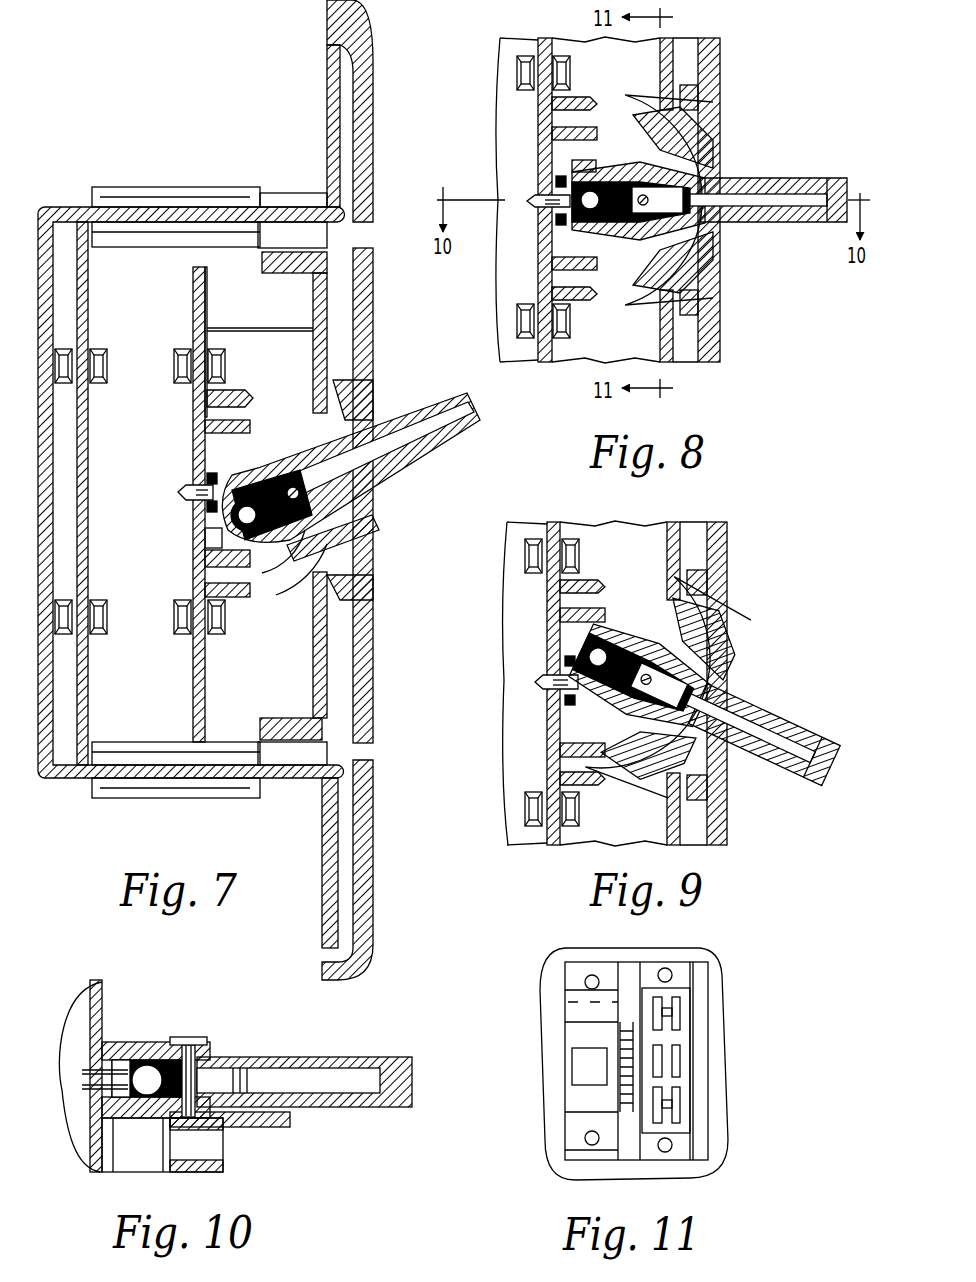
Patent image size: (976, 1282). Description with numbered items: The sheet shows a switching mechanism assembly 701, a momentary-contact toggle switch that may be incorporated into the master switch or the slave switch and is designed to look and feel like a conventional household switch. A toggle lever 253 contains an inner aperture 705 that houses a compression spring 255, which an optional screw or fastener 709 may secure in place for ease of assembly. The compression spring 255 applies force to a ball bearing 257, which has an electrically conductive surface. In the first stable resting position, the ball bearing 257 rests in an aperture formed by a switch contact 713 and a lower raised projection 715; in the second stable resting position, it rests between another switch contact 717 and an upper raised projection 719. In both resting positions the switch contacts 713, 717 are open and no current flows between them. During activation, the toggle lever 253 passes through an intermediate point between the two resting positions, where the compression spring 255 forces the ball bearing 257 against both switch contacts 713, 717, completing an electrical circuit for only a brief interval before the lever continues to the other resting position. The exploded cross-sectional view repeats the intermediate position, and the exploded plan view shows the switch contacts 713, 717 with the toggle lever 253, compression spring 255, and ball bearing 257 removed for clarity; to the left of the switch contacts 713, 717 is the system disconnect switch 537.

In FIG. 7, the switching mechanism assembly 701 is at (127, 128).
In FIG. 8, the switching mechanism assembly 701 is at (748, 70).
In FIG. 9, the switching mechanism assembly 701 is at (750, 558).
In FIG. 8, the toggle lever 253 is at (767, 177).
In FIG. 9, the toggle lever 253 is at (797, 727).
In FIG. 10, the toggle lever 253 is at (325, 1057).
In FIG. 7, the compression spring 255 is at (357, 590).
In FIG. 8, the compression spring 255 is at (597, 165).
In FIG. 10, the compression spring 255 is at (180, 1040).
In FIG. 7, the ball bearing 257 is at (250, 545).
In FIG. 8, the ball bearing 257 is at (530, 193).
In FIG. 10, the ball bearing 257 is at (146, 1065).
In FIG. 7, the inner aperture 705 is at (360, 523).
In FIG. 7, the screw or fastener 709 is at (360, 555).
In FIG. 7, the switch contact 713 is at (207, 512).
In FIG. 8, the switch contact 713 is at (556, 222).
In FIG. 10, the switch contact 713 is at (82, 1087).
In FIG. 11, the switch contact 713 is at (680, 1108).
In FIG. 7, the lower raised projection 715 is at (212, 543).
In FIG. 7, the switch contact 717 is at (207, 464).
In FIG. 8, the switch contact 717 is at (535, 176).
In FIG. 10, the switch contact 717 is at (82, 1072).
In FIG. 11, the switch contact 717 is at (680, 1008).
In FIG. 7, the upper raised projection 719 is at (193, 425).
In FIG. 11, the system disconnect switch 537 is at (570, 973).